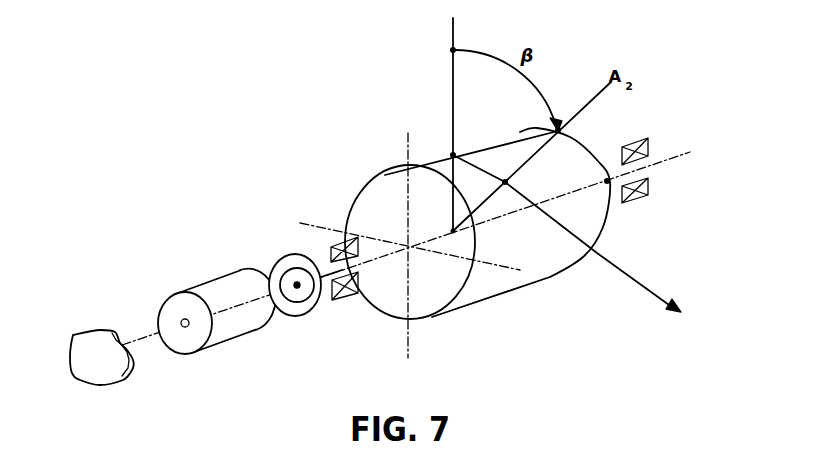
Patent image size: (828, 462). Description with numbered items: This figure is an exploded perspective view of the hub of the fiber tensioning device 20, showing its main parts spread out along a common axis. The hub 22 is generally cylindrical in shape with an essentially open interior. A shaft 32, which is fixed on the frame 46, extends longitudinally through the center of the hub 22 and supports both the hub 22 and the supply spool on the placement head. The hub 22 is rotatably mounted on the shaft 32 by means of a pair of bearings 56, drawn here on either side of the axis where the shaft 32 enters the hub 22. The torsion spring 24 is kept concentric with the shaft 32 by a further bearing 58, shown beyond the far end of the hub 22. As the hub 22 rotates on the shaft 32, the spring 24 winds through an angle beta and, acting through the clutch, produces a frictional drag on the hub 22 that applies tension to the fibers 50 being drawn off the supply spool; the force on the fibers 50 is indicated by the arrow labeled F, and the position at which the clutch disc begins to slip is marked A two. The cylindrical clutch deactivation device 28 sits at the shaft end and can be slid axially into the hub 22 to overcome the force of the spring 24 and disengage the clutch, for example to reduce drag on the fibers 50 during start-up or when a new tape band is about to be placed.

The device 20 is at (330, 133).
The hub 22 is at (547, 263).
The spring 24 is at (285, 262).
The clutch deactivation device 28 is at (217, 293).
The shaft 32 is at (143, 337).
The frame 46 is at (98, 345).
The fibers 50 is at (633, 273).
The bearings 56 is at (328, 246).
The bearing 58 is at (648, 150).